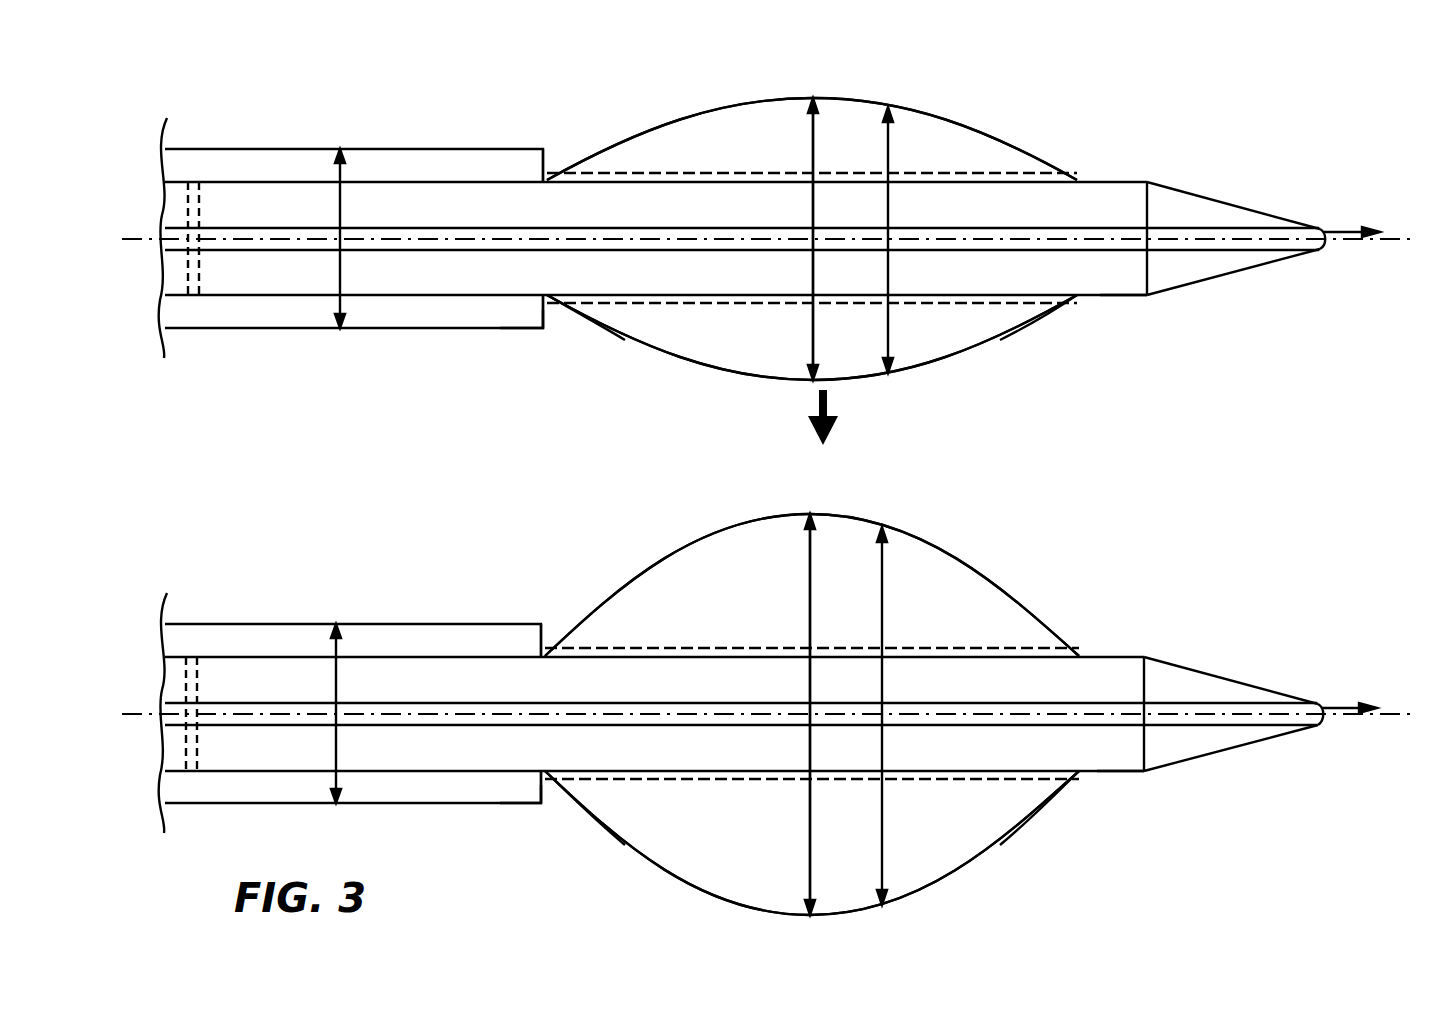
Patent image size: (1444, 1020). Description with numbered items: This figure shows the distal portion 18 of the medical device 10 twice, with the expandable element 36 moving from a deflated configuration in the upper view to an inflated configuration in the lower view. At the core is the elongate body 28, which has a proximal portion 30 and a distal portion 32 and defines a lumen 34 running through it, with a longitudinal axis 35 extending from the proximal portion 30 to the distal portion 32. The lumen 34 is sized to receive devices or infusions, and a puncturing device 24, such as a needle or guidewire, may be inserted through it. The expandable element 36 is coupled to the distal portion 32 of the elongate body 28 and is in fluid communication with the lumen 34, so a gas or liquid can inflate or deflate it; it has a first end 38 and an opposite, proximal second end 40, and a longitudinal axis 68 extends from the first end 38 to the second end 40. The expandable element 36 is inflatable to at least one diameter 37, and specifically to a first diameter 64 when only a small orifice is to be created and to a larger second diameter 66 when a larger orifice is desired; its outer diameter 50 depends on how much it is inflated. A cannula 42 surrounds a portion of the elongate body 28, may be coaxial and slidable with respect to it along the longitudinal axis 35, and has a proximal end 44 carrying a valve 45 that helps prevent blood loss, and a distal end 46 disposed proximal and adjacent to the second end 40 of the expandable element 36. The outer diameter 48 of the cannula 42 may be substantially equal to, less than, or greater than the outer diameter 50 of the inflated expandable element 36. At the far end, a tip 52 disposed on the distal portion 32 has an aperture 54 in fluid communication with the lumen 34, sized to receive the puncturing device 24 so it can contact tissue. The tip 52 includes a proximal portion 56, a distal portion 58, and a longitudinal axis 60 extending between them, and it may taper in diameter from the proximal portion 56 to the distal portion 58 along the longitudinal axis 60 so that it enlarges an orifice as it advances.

The medical device 10 is at (1007, 72).
The distal portion 18 is at (568, 78).
The puncturing device 24 is at (1350, 228).
The elongate body 28 is at (980, 297).
The proximal portion of the elongate body 30 is at (520, 312).
The distal portion of the elongate body 32 is at (1148, 178).
The lumen 34 is at (747, 248).
The longitudinal axis of the elongate body 35 is at (683, 238).
The expandable element 36 is at (710, 106).
The diameter 37 is at (887, 155).
The first end of the expandable element 38 is at (1085, 297).
The second end of the expandable element 40 is at (552, 312).
The cannula 42 is at (378, 147).
The proximal end of the cannula 44 is at (185, 146).
The valve 45 is at (195, 202).
The distal end of the cannula 46 is at (542, 148).
The outer diameter of the cannula 48 is at (337, 213).
The outer diameter of the expandable element 50 is at (817, 137).
The tip 52 is at (1223, 278).
The aperture 54 is at (1323, 228).
The proximal portion of the tip 56 is at (1155, 312).
The distal portion of the tip 58 is at (1323, 272).
The longitudinal axis of the tip 60 is at (1412, 240).
The first diameter 64 is at (812, 155).
The second diameter 66 is at (808, 603).
The longitudinal axis of the expandable element 68 is at (672, 170).